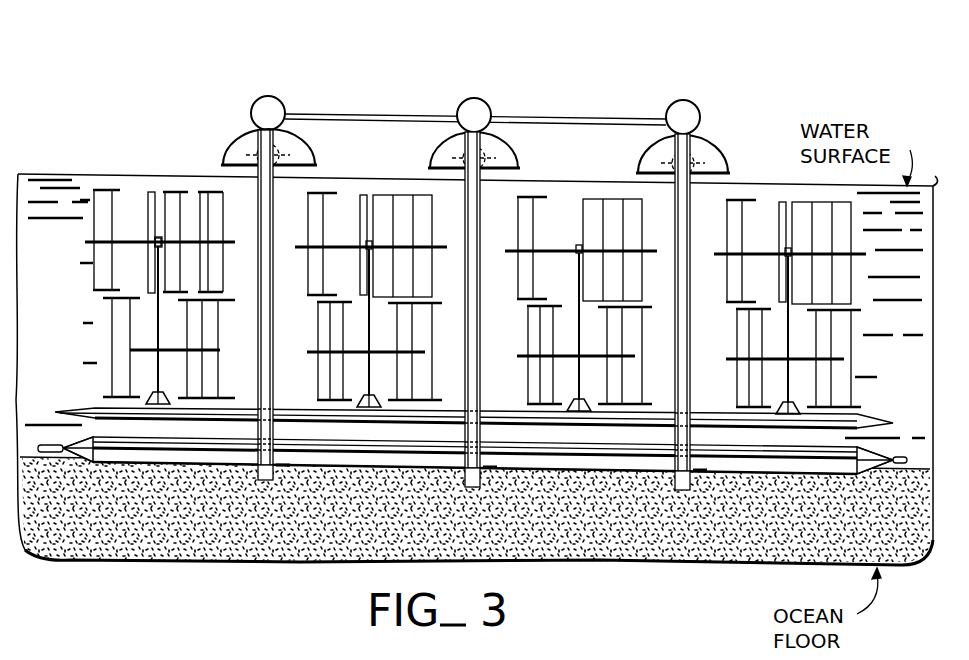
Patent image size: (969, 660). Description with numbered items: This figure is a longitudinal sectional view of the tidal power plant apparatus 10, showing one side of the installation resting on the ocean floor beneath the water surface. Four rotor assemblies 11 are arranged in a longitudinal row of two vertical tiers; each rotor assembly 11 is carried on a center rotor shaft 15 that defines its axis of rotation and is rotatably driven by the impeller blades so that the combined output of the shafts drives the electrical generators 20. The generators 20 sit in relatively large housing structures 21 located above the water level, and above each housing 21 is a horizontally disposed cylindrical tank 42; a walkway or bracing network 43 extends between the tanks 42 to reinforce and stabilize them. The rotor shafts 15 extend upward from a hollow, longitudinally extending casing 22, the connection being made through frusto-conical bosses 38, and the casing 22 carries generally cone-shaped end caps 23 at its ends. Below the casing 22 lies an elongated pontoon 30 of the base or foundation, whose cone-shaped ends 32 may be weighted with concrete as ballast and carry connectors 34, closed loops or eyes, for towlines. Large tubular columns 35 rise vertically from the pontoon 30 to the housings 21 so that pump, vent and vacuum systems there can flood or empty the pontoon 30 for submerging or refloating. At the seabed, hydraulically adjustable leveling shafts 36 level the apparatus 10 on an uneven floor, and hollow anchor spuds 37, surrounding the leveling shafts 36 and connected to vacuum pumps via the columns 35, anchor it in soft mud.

The apparatus 10 is at (557, 83).
The rotor assembly 11 is at (135, 196).
The rotor shaft 15 is at (160, 369).
The electrical generator 20 is at (309, 144).
The housing structure 21 is at (318, 159).
The longitudinally extending casing 22 is at (508, 422).
The cone-shaped end cap 23 is at (78, 403).
The pontoon 30 is at (548, 462).
The cone-shaped end 32 is at (64, 455).
The connector 34 is at (50, 453).
The tubular column 35 is at (258, 204).
The leveling shaft 36 is at (290, 470).
The anchor spud 37 is at (263, 481).
The frusto-conical boss 38 is at (158, 404).
The cylindrical tank 42 is at (268, 105).
The walkway or bracing network 43 is at (367, 116).